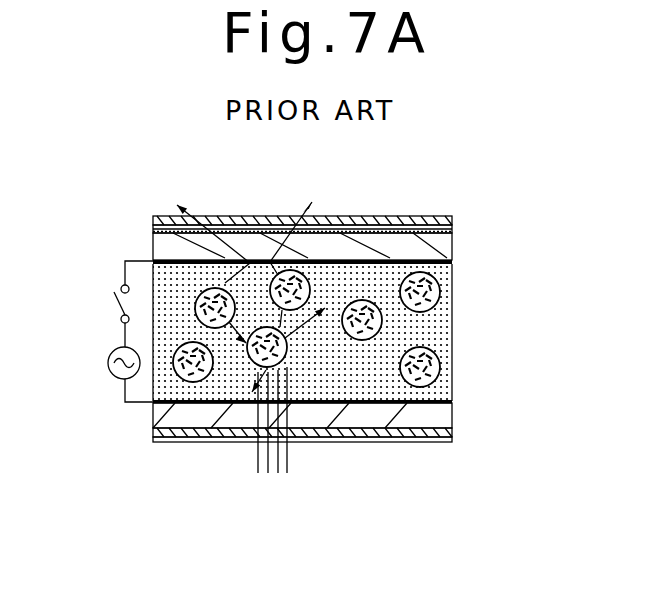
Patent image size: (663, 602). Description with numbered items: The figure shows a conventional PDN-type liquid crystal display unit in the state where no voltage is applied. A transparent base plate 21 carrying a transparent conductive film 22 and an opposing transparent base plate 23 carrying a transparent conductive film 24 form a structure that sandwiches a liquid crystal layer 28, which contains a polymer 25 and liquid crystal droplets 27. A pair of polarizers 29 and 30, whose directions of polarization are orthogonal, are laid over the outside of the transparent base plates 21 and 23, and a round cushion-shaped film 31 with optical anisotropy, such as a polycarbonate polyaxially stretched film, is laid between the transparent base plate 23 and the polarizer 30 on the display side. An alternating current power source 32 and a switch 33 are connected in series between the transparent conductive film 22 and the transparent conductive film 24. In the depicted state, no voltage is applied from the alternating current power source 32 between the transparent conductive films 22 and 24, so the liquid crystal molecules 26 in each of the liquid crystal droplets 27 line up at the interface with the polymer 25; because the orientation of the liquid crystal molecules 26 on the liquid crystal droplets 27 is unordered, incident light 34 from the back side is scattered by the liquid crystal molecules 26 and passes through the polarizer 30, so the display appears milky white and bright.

The transparent base plate 21 is at (452, 431).
The transparent conductive film 22 is at (450, 403).
The transparent base plate 23 is at (452, 248).
The transparent conductive film 24 is at (452, 263).
The polymer 25 is at (168, 280).
The liquid crystal molecule 26 is at (163, 383).
The liquid crystal droplet 27 is at (194, 384).
The liquid crystal layer 28 is at (460, 302).
The polarizer 29 is at (452, 440).
The polarizer 30 is at (350, 222).
The round cushion-shaped film with optical anisotropy 31 is at (452, 222).
The alternating current power source 32 is at (108, 362).
The switch 33 is at (113, 302).
The incident light 34 is at (290, 455).